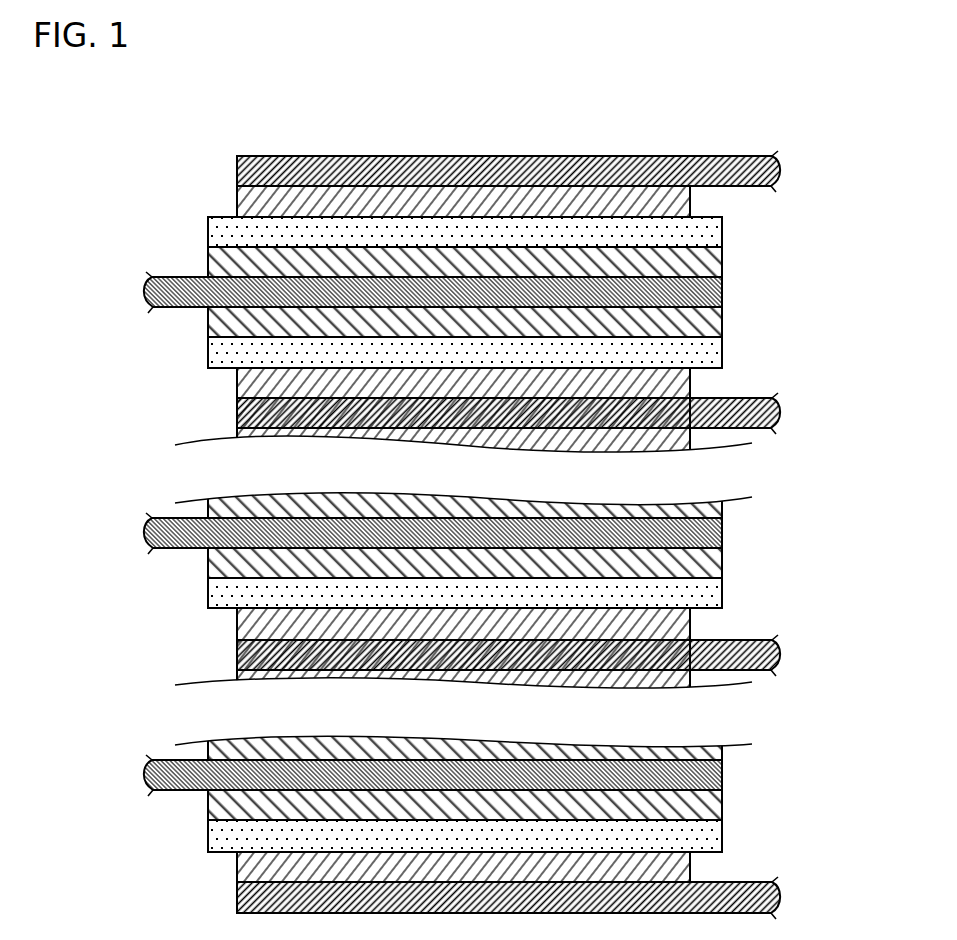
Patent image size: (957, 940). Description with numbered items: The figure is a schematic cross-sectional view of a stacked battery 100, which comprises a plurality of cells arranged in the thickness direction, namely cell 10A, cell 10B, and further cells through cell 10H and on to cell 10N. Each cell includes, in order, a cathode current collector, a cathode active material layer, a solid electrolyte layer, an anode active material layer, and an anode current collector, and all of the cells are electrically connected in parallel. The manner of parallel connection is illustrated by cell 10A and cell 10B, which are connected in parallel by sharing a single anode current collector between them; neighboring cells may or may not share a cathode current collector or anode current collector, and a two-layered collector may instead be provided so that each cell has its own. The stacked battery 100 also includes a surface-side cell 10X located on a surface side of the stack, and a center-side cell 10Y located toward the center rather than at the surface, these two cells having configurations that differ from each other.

The stacked battery 100 is at (782, 122).
The cell 10A is at (87, 307).
The surface-side cell 10X is at (392, 232).
The cell 10B is at (842, 277).
The cell 10H is at (842, 670).
The center-side cell 10Y is at (533, 589).
The cell 10N is at (842, 760).